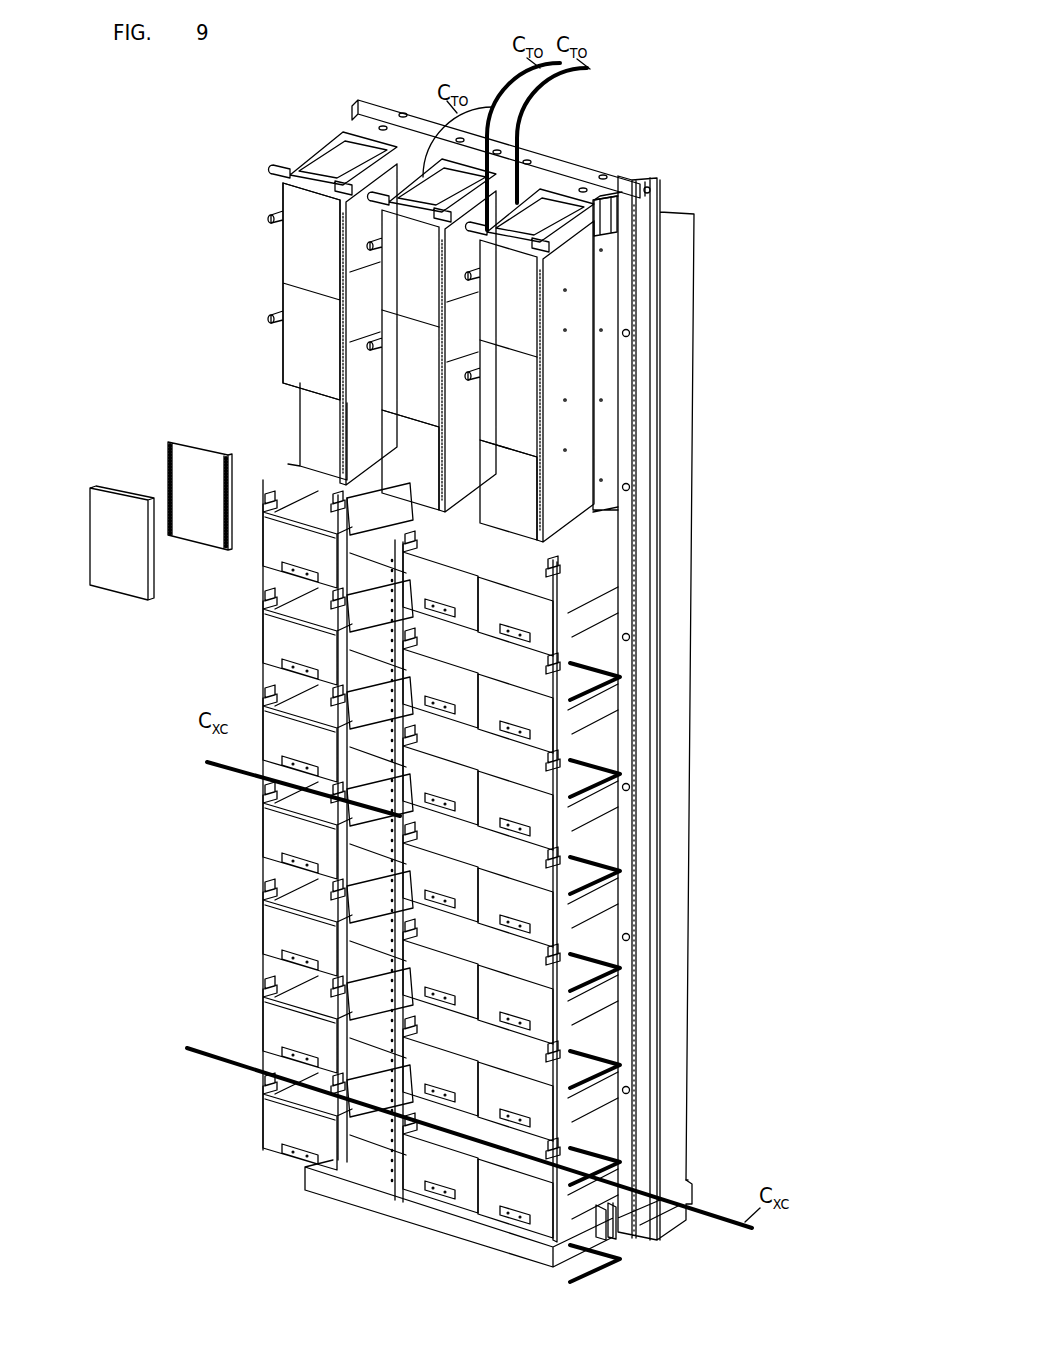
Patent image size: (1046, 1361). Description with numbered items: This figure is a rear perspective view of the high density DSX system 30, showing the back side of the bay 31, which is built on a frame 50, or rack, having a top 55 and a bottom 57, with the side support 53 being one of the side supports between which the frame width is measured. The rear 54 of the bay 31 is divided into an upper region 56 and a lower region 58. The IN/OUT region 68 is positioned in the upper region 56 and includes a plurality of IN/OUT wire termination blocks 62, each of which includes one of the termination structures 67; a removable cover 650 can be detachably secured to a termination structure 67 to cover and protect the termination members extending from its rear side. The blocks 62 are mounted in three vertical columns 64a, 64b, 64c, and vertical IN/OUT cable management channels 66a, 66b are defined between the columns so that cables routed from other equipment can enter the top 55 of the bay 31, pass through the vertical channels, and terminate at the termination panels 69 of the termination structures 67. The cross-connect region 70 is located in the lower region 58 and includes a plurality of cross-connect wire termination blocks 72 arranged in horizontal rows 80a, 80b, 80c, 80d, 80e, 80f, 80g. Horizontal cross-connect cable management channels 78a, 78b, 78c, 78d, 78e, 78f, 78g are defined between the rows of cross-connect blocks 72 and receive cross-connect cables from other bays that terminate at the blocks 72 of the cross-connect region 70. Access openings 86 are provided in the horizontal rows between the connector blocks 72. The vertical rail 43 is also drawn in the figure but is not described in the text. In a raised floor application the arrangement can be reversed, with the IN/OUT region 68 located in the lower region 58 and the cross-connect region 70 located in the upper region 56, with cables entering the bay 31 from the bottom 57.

The high density DSX system 30 is at (160, 250).
The bay 31 is at (748, 230).
The vertical rail 43 is at (662, 901).
The frame 50 is at (397, 116).
The side support 53 is at (624, 440).
The rear 54 is at (156, 1185).
The top 55 is at (612, 187).
The upper region 56 is at (800, 320).
The bottom 57 is at (668, 1213).
The lower region 58 is at (752, 856).
The IN/OUT wire termination block 62 is at (303, 237).
The vertical column 64a is at (300, 136).
The vertical column 64b is at (443, 192).
The vertical column 64c is at (550, 212).
The vertical IN/OUT cable management channel 66a is at (408, 162).
The vertical IN/OUT cable management channel 66b is at (506, 200).
The termination structure 67 is at (113, 392).
The IN/OUT region 68 is at (222, 338).
The termination panel 69 is at (197, 462).
The cross-connect region 70 is at (156, 878).
The cross-connect wire termination block 72 is at (517, 605).
The horizontal cross-connect cable management channel 78a is at (575, 548).
The horizontal cross-connect cable management channel 78b is at (575, 656).
The horizontal cross-connect cable management channel 78c is at (580, 753).
The horizontal cross-connect cable management channel 78d is at (580, 849).
The horizontal cross-connect cable management channel 78e is at (580, 944).
The horizontal cross-connect cable management channel 78f is at (575, 1041).
The horizontal cross-connect cable management channel 78g is at (575, 1139).
The horizontal row 80a is at (256, 563).
The horizontal row 80b is at (248, 631).
The horizontal row 80c is at (242, 716).
The horizontal row 80d is at (242, 811).
The horizontal row 80e is at (238, 916).
The horizontal row 80f is at (240, 1014).
The horizontal row 80g is at (222, 1115).
The access opening 86 is at (380, 819).
The removable cover 650 is at (115, 505).